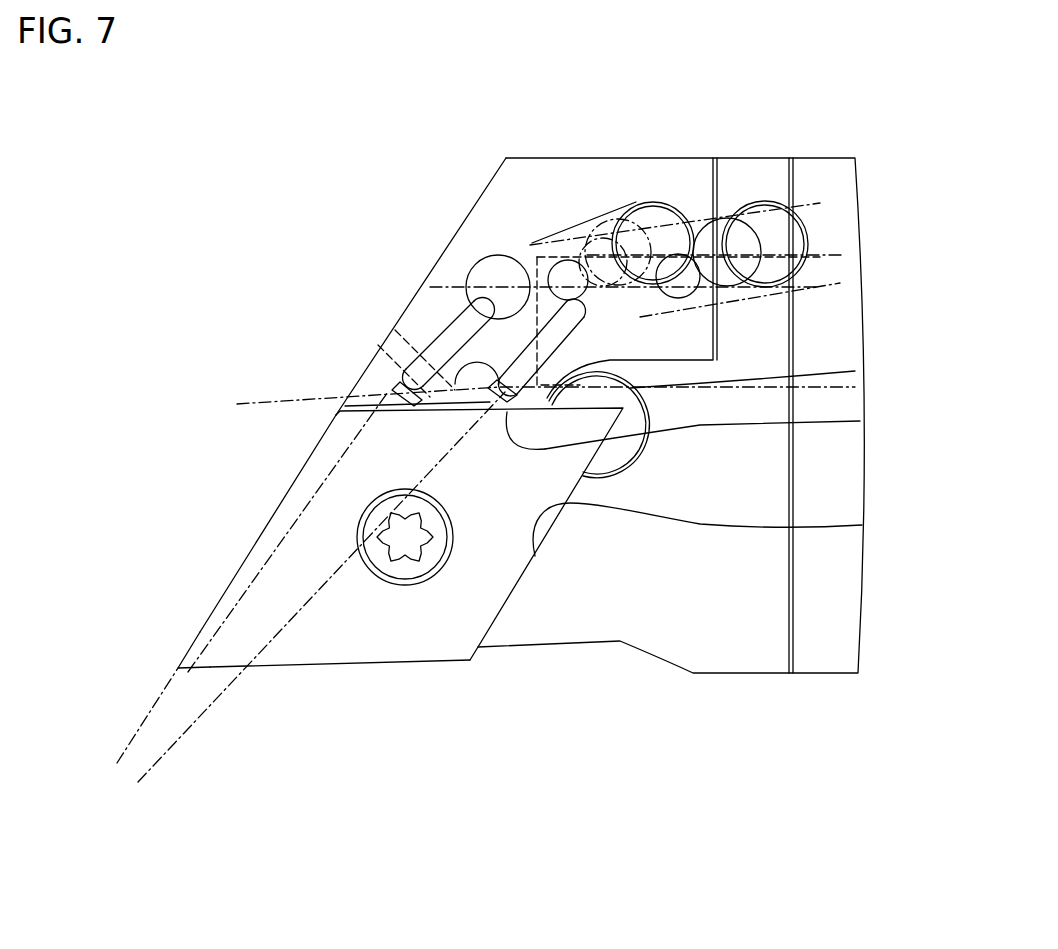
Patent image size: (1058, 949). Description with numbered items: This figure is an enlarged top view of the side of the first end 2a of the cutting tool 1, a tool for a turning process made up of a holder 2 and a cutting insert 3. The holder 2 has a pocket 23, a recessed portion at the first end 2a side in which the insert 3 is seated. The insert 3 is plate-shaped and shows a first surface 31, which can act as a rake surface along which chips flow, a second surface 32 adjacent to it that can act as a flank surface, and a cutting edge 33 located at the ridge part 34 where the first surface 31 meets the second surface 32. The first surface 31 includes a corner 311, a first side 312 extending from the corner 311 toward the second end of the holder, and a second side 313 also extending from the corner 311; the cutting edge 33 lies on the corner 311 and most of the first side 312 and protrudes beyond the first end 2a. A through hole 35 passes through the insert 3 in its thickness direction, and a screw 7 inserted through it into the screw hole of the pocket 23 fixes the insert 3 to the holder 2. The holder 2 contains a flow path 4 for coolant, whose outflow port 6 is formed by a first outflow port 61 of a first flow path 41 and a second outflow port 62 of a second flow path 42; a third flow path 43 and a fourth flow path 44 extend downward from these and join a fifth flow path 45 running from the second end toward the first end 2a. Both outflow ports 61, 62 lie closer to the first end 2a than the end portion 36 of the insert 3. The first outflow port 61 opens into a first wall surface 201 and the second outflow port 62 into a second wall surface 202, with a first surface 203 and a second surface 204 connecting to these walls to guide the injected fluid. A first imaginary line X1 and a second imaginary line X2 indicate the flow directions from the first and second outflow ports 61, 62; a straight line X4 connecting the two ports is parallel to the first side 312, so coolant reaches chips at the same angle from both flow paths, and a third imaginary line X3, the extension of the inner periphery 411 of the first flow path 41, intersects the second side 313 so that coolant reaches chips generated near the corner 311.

The cutting tool 1 is at (914, 112).
The holder 2 is at (760, 674).
The first end 2a is at (460, 232).
The cutting insert 3 is at (249, 538).
The flow path 4 is at (636, 278).
The outflow port 6 is at (525, 430).
The screw 7 is at (417, 547).
The pocket 23 is at (862, 525).
The first surface 31 is at (305, 637).
The second surface 32 is at (243, 562).
The cutting edge 33 is at (393, 663).
The ridge part 34 is at (222, 598).
The through hole 35 is at (422, 590).
The end portion 36 is at (857, 371).
The first flow path 41 is at (430, 355).
The second flow path 42 is at (660, 354).
The third flow path 43 is at (530, 245).
The fourth flow path 44 is at (640, 320).
The fifth flow path 45 is at (823, 257).
The first outflow port 61 is at (410, 395).
The second outflow port 62 is at (860, 422).
The first wall surface 201 is at (392, 382).
The second wall surface 202 is at (460, 322).
The first surface 203 is at (340, 413).
The second surface 204 is at (432, 330).
The corner 311 is at (170, 675).
The first side 312 is at (278, 672).
The second side 313 is at (212, 613).
The inner periphery 411 is at (413, 365).
The first imaginary line X1 is at (122, 754).
The second imaginary line X2 is at (157, 770).
The third imaginary line X3 is at (297, 514).
The straight line X4 is at (531, 402).